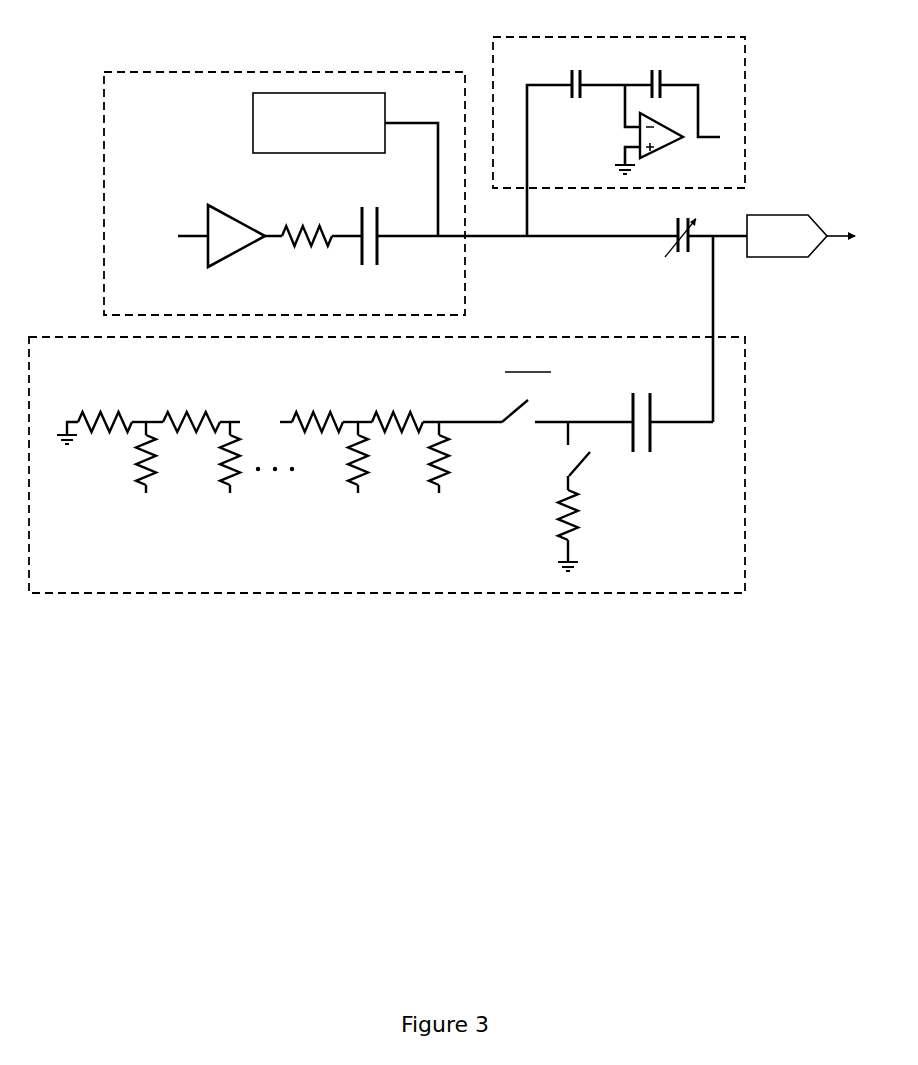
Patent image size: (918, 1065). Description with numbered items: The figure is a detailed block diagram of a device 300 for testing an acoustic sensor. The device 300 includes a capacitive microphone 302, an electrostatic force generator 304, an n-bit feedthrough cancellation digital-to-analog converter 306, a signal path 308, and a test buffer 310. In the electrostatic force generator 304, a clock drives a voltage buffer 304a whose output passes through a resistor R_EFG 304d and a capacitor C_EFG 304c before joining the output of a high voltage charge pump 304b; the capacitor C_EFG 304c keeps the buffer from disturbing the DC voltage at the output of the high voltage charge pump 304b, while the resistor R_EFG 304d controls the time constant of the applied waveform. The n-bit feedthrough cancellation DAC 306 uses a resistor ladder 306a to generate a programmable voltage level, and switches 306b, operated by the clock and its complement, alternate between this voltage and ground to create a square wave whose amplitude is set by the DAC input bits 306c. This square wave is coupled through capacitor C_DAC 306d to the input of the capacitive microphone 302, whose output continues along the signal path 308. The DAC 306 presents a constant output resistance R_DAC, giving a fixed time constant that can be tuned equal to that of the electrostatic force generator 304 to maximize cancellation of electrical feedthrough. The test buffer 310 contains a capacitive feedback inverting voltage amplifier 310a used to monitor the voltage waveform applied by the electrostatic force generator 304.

The device for testing an acoustic sensor 300 is at (596, 638).
The capacitive microphone 302 is at (681, 239).
The electrostatic force generator 304 is at (284, 193).
The voltage buffer 304a is at (233, 223).
The high voltage charge pump 304b is at (345, 164).
The capacitor C_EFG 304c is at (390, 225).
The resistor R_EFG 304d is at (307, 236).
The n-bit feedthrough cancellation digital-to-analog converter 306 is at (387, 465).
The R-2R ladder 306a is at (279, 419).
The switches 306b is at (567, 471).
The DAC input bits b(0) through b(n-1) 306c is at (275, 484).
The capacitor C_DAC 306d is at (669, 425).
The signal path 308 is at (801, 251).
The test buffer 310 is at (619, 136).
The capacitive feedback inverting voltage amplifier 310a is at (631, 135).